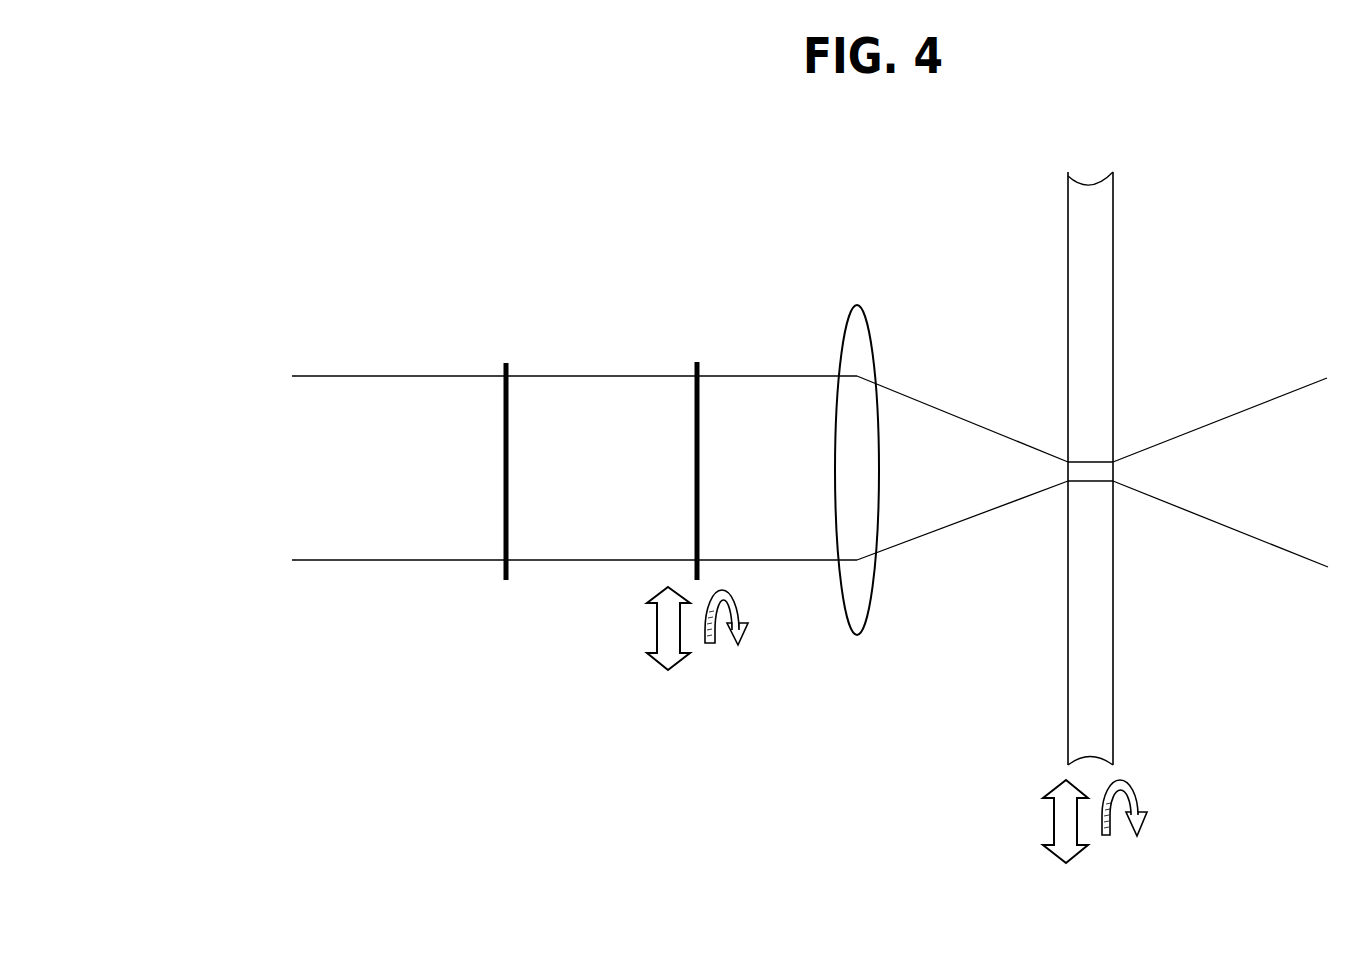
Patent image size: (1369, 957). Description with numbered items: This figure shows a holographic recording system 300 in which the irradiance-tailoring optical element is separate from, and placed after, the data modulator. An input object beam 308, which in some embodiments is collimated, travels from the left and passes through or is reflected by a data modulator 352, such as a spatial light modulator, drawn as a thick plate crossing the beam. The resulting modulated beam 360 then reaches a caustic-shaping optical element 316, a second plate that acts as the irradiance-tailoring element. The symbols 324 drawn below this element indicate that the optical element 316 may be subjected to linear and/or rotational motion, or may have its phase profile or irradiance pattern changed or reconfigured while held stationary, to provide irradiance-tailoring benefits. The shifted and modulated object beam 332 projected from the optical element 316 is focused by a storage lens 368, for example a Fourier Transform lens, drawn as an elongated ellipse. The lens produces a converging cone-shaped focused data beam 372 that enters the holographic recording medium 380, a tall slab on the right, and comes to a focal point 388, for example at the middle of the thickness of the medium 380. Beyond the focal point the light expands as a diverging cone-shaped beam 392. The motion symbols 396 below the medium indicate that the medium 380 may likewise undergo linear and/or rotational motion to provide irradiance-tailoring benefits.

The holographic recording system 300 is at (290, 180).
The input object beam 308 is at (390, 573).
The data modulator 352 is at (504, 363).
The modulated beam 360 is at (604, 343).
The caustic-shaping optical element 316 is at (699, 362).
The shifted and modulated object beam 332 is at (784, 348).
The storage lens 368 is at (857, 633).
The converging cone-shaped focused data beam 372 is at (976, 402).
The holographic recording medium 380 is at (1086, 333).
The focal point 388 is at (1093, 473).
The diverging cone-shaped beam 392 is at (1260, 388).
The motion symbols for optical element 324 is at (685, 677).
The motion symbols for medium 396 is at (1030, 828).